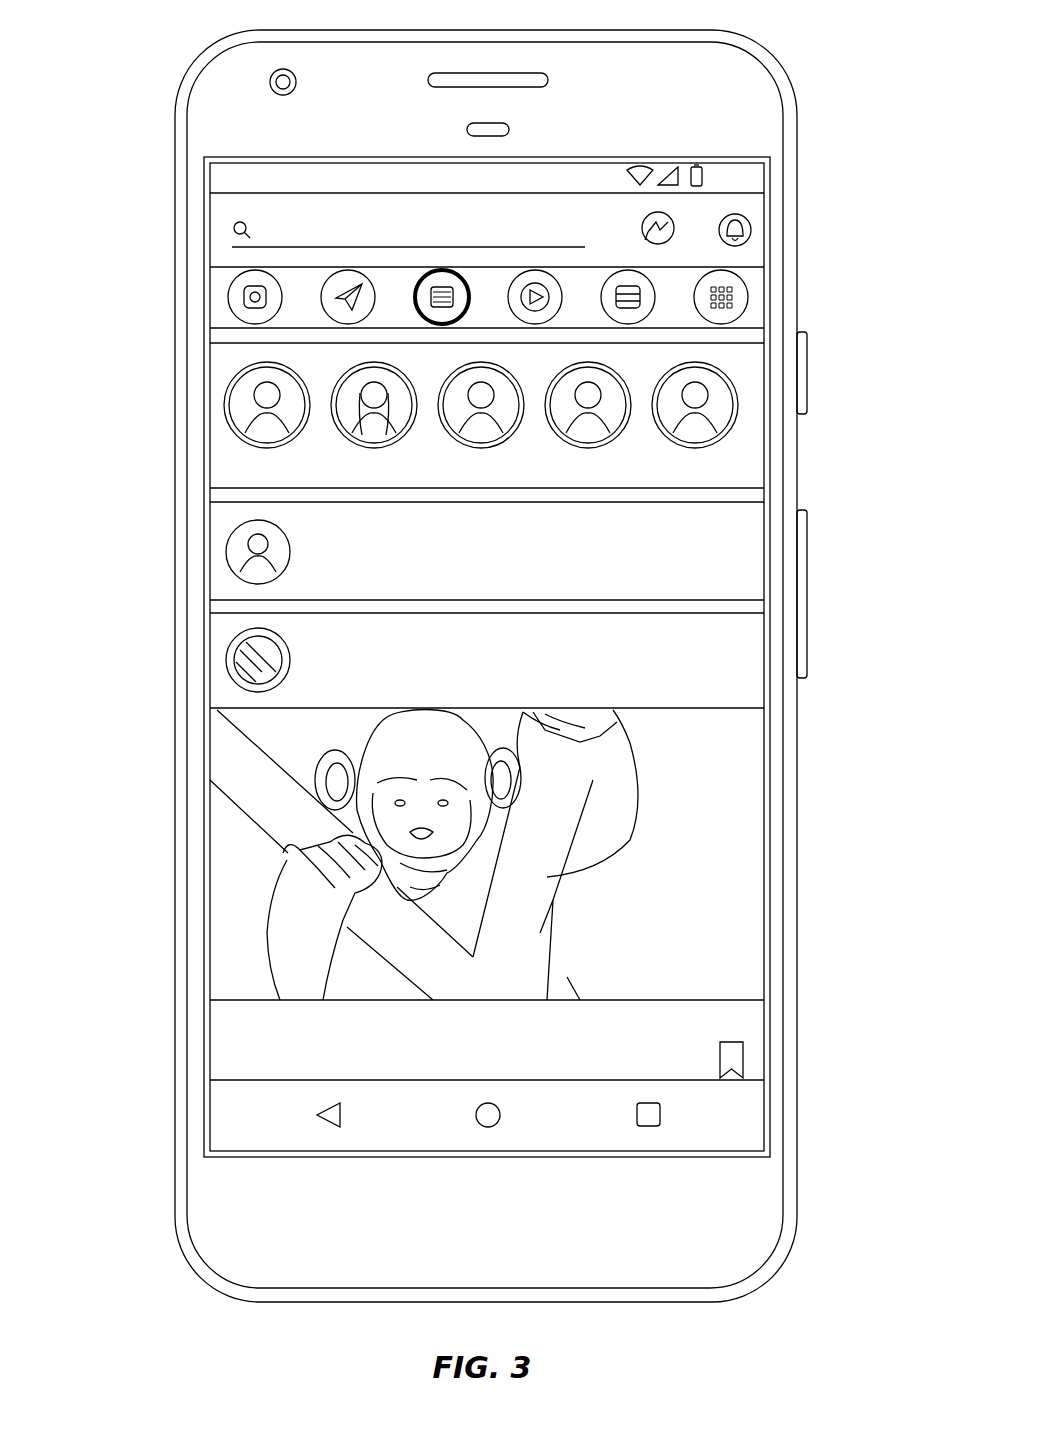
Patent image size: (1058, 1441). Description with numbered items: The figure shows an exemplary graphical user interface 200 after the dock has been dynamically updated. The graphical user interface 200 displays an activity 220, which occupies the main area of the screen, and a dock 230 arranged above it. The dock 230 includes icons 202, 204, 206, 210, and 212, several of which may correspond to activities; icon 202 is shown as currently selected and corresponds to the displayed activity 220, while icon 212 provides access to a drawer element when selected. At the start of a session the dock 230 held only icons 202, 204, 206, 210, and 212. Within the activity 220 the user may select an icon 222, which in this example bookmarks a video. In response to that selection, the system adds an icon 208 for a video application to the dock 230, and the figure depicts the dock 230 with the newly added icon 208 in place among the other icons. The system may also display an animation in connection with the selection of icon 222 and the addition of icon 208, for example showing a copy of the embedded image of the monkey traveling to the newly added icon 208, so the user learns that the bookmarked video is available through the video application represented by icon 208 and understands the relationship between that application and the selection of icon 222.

The graphical user interface 200 is at (166, 66).
The icon 202 is at (417, 273).
The icon 204 is at (327, 287).
The icon 206 is at (232, 283).
The icon 208 is at (550, 278).
The icon 210 is at (645, 280).
The icon 212 is at (737, 282).
The activity 220 is at (475, 736).
The icon 222 is at (743, 1050).
The dock 230 is at (478, 209).